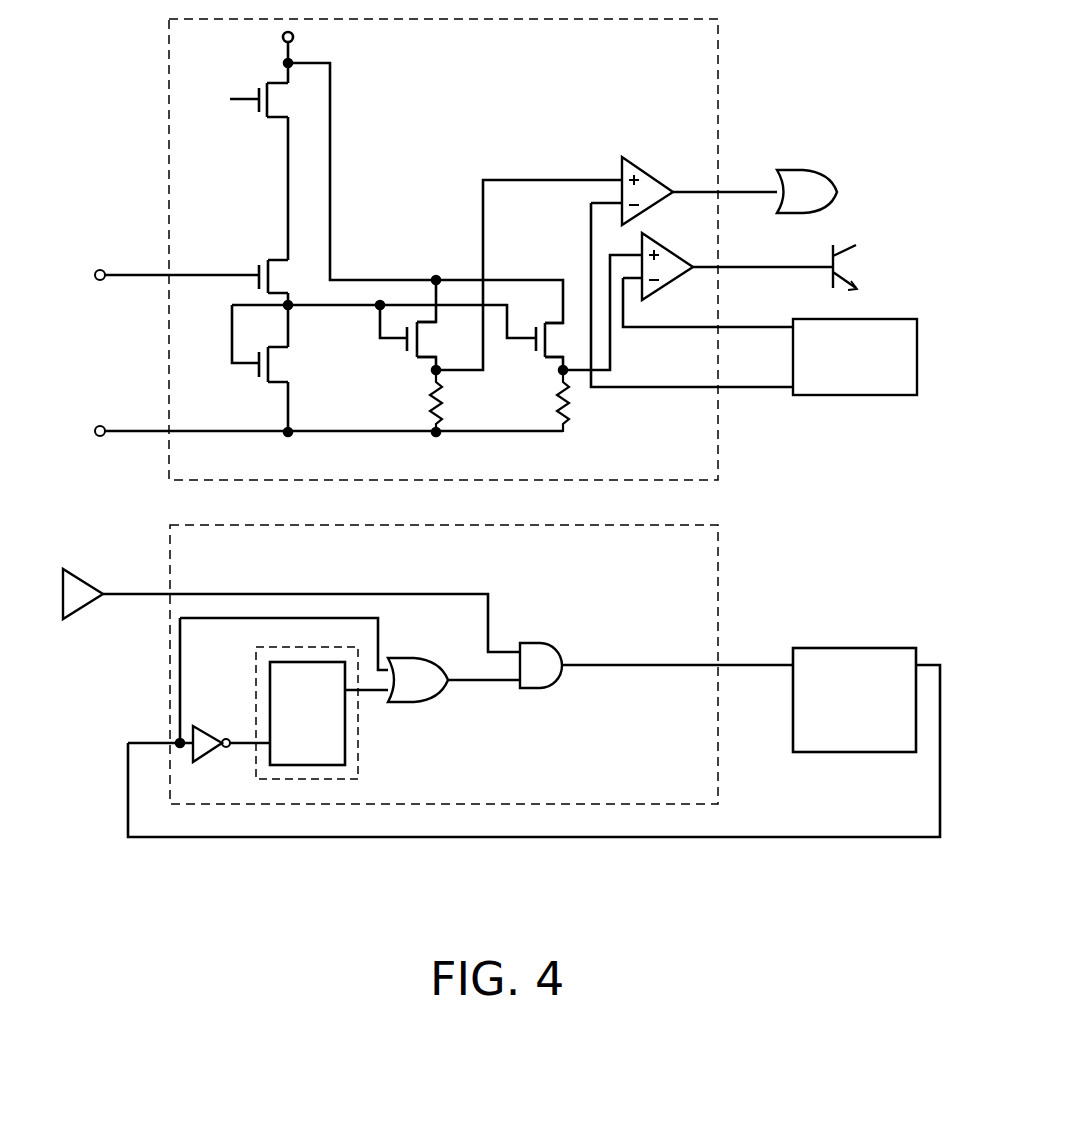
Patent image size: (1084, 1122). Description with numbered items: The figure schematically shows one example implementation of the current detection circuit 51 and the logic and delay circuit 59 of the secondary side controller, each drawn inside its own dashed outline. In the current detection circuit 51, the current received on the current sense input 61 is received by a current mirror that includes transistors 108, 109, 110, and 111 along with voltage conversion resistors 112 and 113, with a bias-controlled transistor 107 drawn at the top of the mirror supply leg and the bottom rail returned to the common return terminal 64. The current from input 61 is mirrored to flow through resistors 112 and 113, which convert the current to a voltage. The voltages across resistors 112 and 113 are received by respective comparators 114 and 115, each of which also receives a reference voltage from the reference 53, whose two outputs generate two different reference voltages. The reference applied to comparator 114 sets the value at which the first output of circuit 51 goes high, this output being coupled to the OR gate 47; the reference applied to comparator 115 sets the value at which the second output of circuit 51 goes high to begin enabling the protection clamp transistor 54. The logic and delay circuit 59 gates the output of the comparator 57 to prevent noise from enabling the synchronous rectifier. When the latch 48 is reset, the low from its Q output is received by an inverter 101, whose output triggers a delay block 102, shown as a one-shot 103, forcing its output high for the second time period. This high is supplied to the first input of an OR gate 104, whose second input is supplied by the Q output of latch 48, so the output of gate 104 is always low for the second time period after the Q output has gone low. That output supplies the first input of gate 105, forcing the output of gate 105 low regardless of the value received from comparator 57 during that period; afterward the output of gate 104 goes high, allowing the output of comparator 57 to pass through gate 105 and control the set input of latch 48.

The OR gate 47 is at (817, 170).
The latch 48 is at (845, 648).
The current detection circuit 51 is at (718, 420).
The reference 53 is at (867, 390).
The protection clamp transistor 54 is at (840, 272).
The comparator 57 is at (83, 577).
The logic and delay circuit 59 is at (212, 525).
The current sense input 61 is at (97, 268).
The common return terminal 64 is at (97, 424).
The inverter 101 is at (217, 727).
The delay block 102 is at (370, 757).
The one-shot 103 is at (330, 768).
The OR gate 104 is at (437, 658).
The gate 105 is at (543, 688).
The bias transistor 107 is at (263, 82).
The transistor 108 is at (263, 258).
The transistor 109 is at (282, 367).
The transistor 110 is at (427, 344).
The transistor 111 is at (555, 340).
The voltage conversion resistor 112 is at (443, 395).
The voltage conversion resistor 113 is at (567, 412).
The comparator 114 is at (660, 177).
The comparator 115 is at (680, 251).